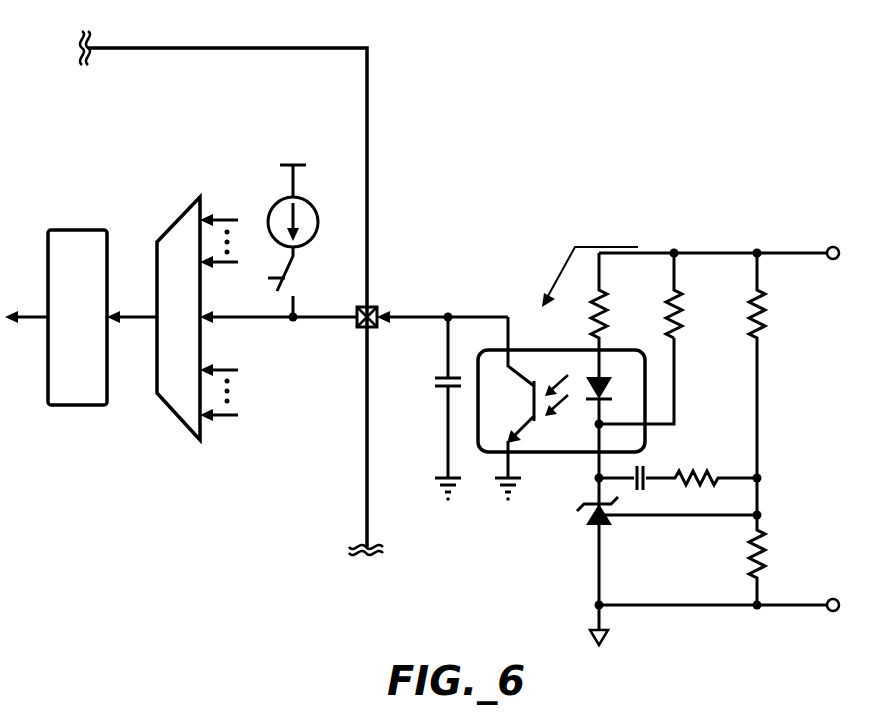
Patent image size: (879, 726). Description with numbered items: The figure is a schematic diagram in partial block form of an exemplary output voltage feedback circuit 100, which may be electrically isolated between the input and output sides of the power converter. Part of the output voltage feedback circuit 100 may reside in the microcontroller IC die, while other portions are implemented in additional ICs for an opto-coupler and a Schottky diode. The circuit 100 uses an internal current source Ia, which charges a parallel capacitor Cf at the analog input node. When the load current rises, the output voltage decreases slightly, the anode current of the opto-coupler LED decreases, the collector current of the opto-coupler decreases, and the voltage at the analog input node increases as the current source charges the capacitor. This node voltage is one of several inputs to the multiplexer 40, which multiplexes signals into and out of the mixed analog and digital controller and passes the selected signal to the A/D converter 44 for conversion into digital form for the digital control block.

The output voltage feedback circuit 100 is at (632, 140).
The multiplexer (MUX) 40 is at (176, 222).
The analog-to-digital (A/D) converter 44 is at (77, 228).